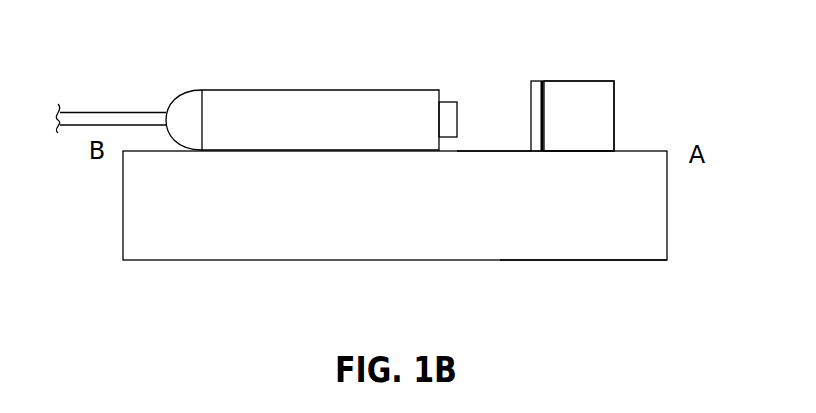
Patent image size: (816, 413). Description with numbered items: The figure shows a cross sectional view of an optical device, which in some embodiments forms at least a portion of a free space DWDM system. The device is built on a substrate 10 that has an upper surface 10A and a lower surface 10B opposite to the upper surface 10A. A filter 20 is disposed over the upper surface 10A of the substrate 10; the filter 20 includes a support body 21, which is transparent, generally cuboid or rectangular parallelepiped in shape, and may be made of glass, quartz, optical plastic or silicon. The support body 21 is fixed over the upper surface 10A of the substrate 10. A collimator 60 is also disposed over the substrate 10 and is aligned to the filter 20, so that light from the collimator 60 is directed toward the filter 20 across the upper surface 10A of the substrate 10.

The substrate 10 is at (382, 219).
The upper surface 10A is at (490, 134).
The lower surface 10B is at (605, 272).
The filter 20 is at (531, 74).
The support body 21 is at (592, 129).
The collimator 60 is at (336, 132).